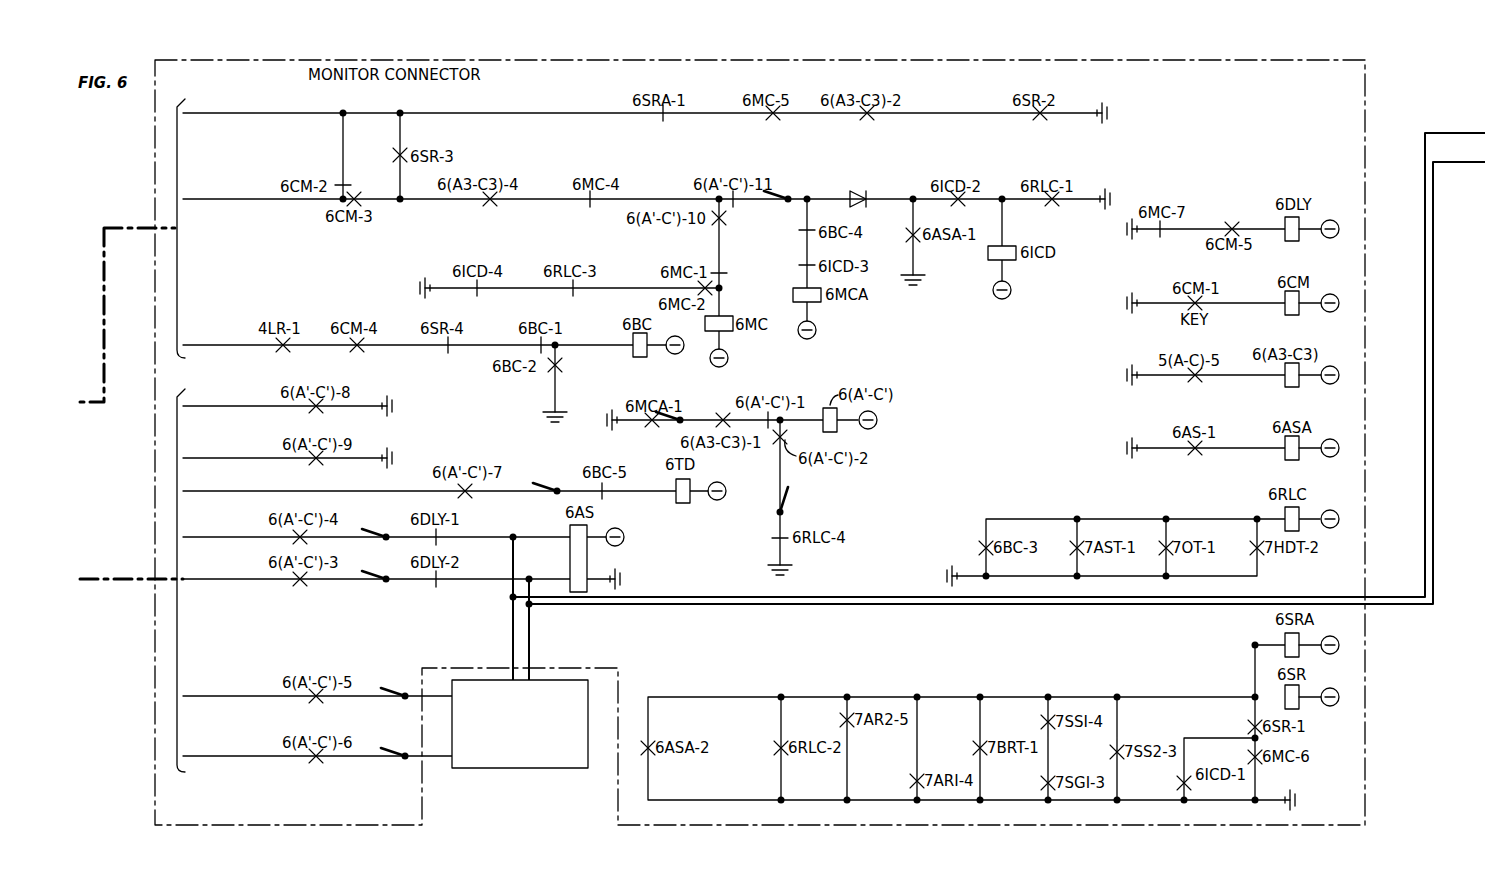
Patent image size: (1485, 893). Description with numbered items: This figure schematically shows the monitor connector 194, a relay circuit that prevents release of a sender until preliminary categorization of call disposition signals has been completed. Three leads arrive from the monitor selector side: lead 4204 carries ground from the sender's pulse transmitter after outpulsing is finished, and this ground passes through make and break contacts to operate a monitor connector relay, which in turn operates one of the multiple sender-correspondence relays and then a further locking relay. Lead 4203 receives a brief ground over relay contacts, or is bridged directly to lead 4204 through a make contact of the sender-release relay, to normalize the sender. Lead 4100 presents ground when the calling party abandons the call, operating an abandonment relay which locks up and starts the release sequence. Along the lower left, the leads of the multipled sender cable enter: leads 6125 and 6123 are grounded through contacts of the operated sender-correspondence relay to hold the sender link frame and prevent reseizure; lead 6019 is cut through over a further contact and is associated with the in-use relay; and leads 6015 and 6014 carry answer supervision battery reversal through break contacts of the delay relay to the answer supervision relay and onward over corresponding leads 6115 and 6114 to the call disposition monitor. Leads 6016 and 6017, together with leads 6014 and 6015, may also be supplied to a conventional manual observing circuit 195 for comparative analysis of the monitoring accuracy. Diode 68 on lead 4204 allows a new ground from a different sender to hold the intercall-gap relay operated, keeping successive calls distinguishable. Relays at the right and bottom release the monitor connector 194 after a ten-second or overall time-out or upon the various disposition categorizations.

The monitor connector 194 is at (153, 178).
The manual observing circuit 195 is at (530, 768).
The diode 68 is at (857, 189).
The lead 4203 is at (645, 108).
The lead 4204 is at (646, 194).
The lead 4100 is at (433, 341).
The lead 6125 is at (287, 401).
The lead 6123 is at (287, 453).
The lead 6019 is at (454, 487).
The lead 6015 is at (403, 532).
The lead 6014 is at (401, 574).
The lead 6016 is at (317, 690).
The lead 6017 is at (317, 750).
The lead 6115 is at (998, 367).
The lead 6114 is at (1006, 397).